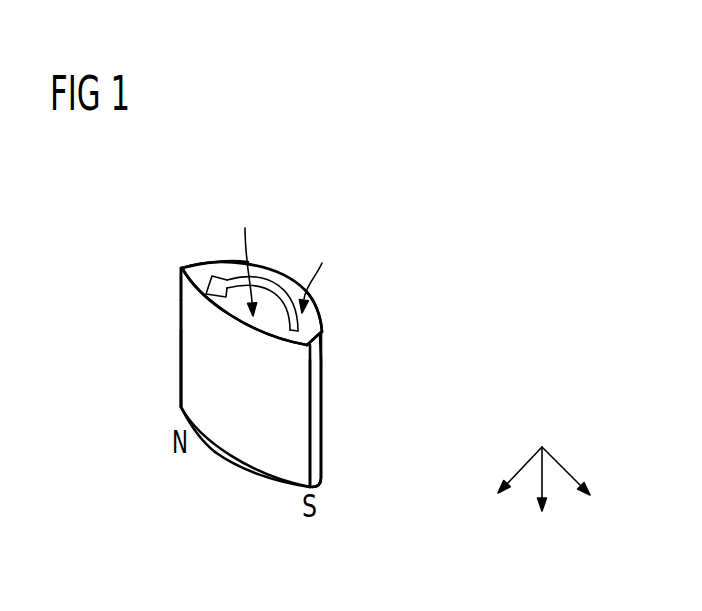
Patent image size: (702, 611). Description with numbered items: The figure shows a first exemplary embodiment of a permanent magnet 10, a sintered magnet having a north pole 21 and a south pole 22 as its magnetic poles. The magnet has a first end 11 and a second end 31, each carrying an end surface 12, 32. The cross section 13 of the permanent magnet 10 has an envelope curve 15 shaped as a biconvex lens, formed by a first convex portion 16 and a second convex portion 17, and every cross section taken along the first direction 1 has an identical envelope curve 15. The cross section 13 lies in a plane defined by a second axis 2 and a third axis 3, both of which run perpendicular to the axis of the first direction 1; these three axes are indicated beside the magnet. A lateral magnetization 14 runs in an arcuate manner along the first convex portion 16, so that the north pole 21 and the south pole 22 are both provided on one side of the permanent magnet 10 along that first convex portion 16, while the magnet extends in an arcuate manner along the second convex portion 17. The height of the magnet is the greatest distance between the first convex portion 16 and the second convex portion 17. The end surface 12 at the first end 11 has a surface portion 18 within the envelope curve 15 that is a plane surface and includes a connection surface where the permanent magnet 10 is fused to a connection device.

The permanent magnet 10 is at (355, 218).
The first end 11 is at (147, 230).
The end surface 12 is at (319, 272).
The cross section 13 is at (204, 283).
The lateral magnetization 14 is at (251, 255).
The envelope curve 15 is at (181, 268).
The first convex portion 16 is at (316, 333).
The second convex portion 17 is at (318, 302).
The surface portion 18 is at (267, 298).
The north pole 21 is at (190, 382).
The south pole 22 is at (300, 431).
The second end 31 is at (149, 408).
The end surface 32 is at (262, 474).
The first direction 1 is at (545, 483).
The second axis 2 is at (555, 458).
The third axis 3 is at (532, 458).